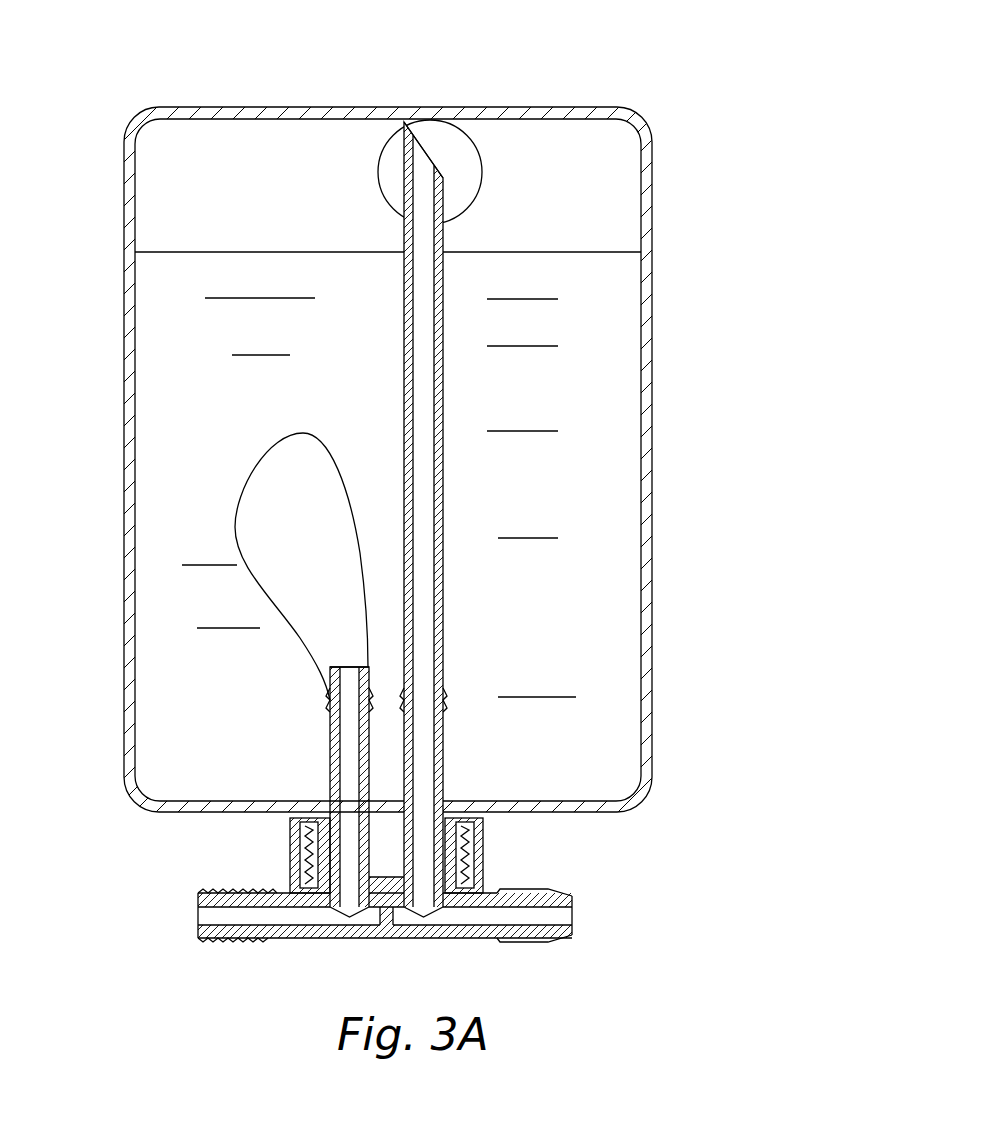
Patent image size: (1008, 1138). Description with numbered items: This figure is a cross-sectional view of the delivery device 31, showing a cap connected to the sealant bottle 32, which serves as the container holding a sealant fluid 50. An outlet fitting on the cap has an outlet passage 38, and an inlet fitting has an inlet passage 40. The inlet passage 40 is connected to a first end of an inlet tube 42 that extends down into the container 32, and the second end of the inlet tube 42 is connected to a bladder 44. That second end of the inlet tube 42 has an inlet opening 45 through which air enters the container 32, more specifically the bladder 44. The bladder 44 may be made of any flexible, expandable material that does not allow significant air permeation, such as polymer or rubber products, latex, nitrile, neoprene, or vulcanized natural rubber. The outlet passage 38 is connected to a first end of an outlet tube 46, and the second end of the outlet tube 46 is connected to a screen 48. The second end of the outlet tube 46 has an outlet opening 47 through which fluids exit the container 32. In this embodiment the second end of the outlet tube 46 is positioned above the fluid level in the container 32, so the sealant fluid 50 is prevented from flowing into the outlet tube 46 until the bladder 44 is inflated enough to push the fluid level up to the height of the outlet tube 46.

The delivery device 31 is at (767, 219).
The sealant bottle 32 is at (177, 155).
The outlet passage 38 is at (533, 918).
The inlet passage 40 is at (247, 915).
The inlet tube 42 is at (328, 745).
The bladder 44 is at (328, 577).
The inlet opening 45 is at (357, 667).
The outlet tube 46 is at (443, 595).
The outlet opening 47 is at (428, 162).
The screen 48 is at (482, 177).
The sealant fluid 50 is at (480, 378).